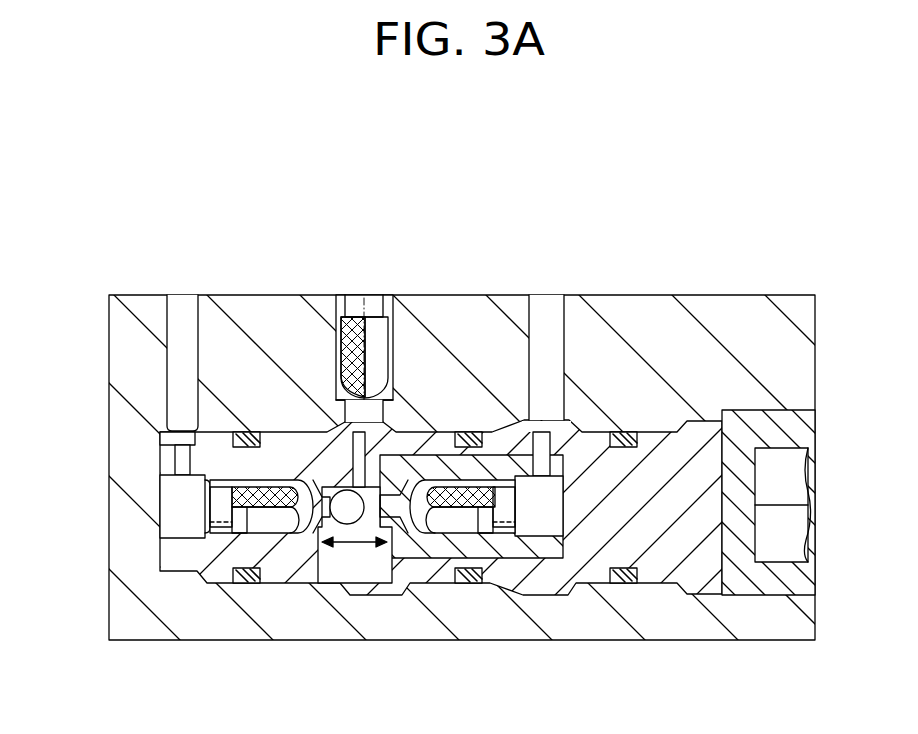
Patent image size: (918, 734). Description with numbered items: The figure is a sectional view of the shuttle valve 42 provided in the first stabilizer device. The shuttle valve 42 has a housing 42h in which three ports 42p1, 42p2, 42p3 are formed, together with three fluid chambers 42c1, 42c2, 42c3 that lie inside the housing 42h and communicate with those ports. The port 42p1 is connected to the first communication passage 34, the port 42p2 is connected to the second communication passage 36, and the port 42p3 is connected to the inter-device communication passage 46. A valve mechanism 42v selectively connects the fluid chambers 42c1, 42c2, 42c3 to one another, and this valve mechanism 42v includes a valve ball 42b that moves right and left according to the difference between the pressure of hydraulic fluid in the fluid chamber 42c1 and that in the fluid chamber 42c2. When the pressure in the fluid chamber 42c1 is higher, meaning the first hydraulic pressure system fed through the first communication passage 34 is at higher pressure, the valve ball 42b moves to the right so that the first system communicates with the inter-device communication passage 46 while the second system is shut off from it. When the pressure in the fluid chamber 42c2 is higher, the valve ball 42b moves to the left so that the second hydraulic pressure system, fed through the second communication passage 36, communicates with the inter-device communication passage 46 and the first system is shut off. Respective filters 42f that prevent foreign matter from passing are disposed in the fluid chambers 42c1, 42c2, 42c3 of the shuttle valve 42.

The shuttle valve 42 is at (750, 186).
The first communication passage 34 is at (181, 284).
The second communication passage 36 is at (545, 284).
The inter-device communication passage 46 is at (364, 295).
The port 42p1 is at (173, 293).
The port 42p2 is at (558, 293).
The port 42p3 is at (380, 293).
The fluid chamber 42c1 is at (188, 530).
The fluid chamber 42c2 is at (533, 517).
The fluid chamber 42c3 is at (390, 325).
The filter 42f is at (336, 352).
The valve mechanism 42v is at (306, 562).
The valve ball 42b is at (358, 512).
The housing 42h is at (610, 628).